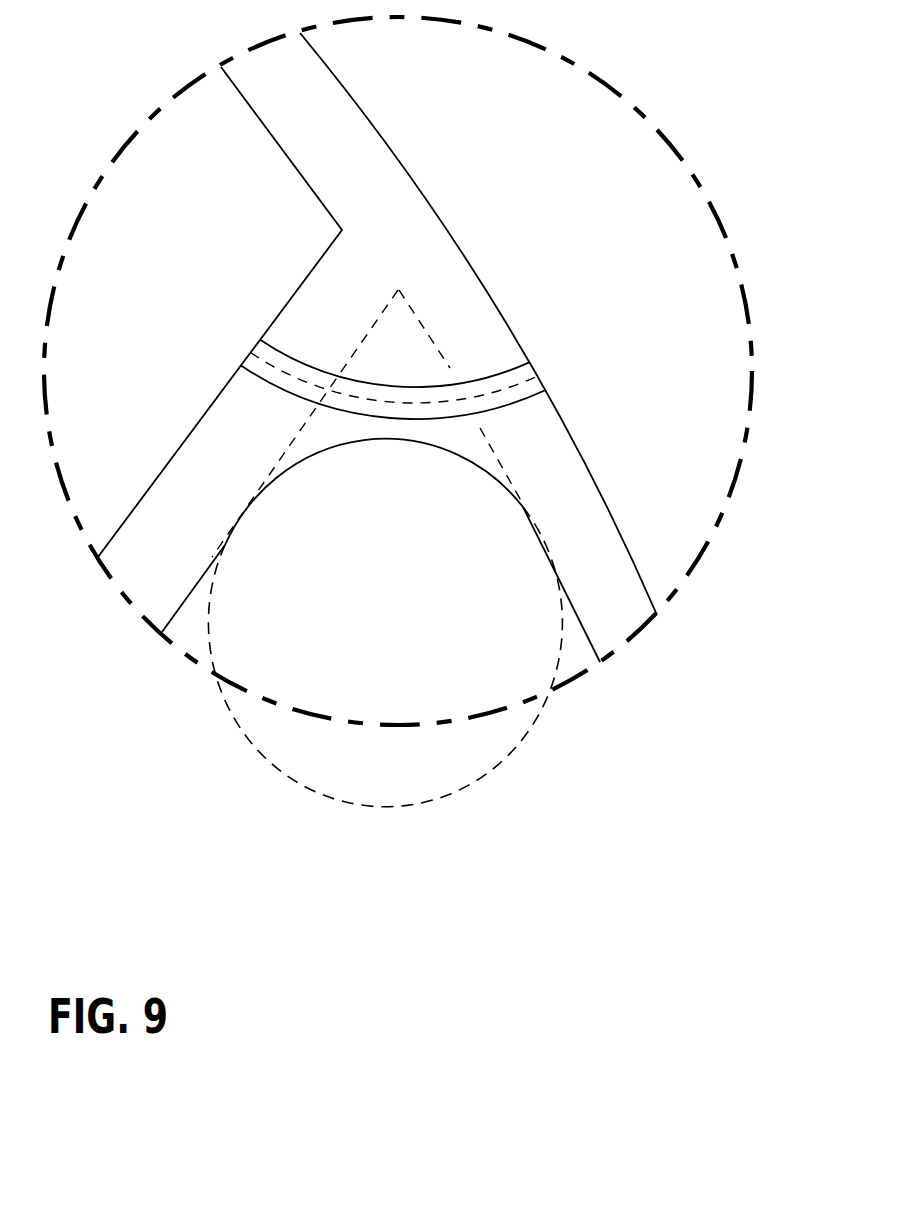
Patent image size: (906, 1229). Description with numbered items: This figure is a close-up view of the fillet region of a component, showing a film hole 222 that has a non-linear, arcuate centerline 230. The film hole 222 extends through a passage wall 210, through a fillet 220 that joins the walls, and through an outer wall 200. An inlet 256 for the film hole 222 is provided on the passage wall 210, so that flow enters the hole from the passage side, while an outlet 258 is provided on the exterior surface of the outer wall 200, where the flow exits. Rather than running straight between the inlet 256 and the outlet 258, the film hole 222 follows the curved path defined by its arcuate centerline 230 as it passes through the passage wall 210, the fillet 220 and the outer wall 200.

The outer wall 200 is at (609, 567).
The passage wall 210 is at (178, 530).
The fillet 220 is at (320, 438).
The film hole 222 is at (473, 378).
The centerline 230 is at (405, 401).
The inlet 256 is at (258, 342).
The outlet 258 is at (535, 373).